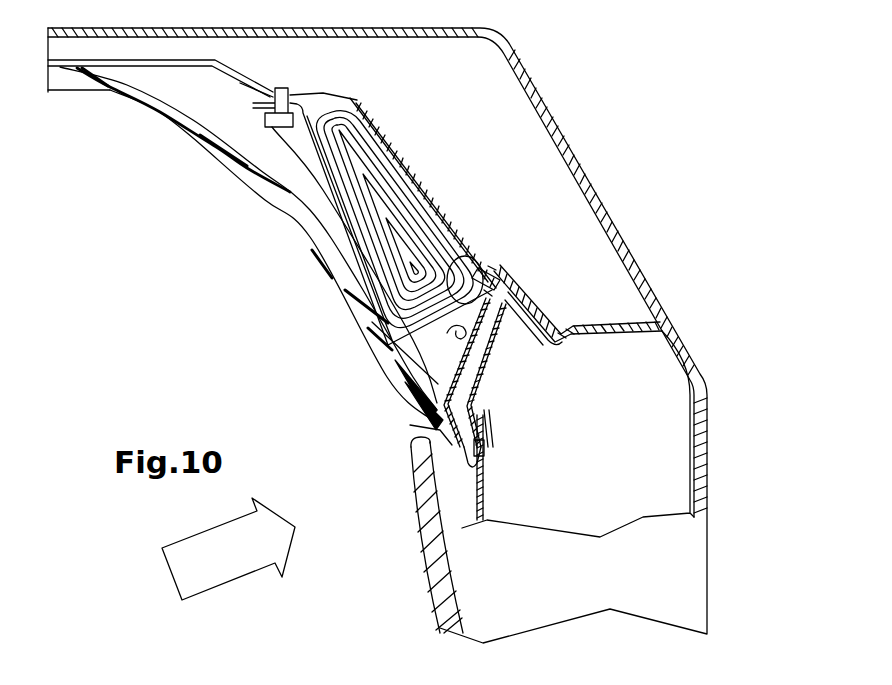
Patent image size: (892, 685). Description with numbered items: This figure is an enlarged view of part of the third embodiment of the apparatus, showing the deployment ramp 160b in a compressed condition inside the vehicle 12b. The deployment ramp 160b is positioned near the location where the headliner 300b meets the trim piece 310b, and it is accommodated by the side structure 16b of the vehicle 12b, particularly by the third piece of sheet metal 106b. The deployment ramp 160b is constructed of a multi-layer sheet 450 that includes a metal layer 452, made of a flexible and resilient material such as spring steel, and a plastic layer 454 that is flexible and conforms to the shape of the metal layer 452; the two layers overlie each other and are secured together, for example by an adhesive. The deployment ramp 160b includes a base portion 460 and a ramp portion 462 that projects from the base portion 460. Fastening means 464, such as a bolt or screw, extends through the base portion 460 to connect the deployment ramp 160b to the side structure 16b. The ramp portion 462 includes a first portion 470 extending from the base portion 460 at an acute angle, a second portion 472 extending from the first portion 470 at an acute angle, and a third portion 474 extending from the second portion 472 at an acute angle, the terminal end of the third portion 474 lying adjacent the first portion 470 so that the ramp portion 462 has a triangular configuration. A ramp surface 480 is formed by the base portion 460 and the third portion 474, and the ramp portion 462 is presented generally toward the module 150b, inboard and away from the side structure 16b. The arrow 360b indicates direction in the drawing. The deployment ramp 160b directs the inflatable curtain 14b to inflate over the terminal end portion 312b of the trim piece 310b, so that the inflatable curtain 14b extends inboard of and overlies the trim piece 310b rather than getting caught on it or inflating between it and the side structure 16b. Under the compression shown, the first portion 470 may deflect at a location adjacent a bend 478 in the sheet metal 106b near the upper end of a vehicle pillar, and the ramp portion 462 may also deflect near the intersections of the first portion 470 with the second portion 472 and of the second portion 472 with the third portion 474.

The vehicle 12b is at (586, 92).
The inflatable curtain 14b is at (398, 218).
The side structure 16b is at (722, 449).
The third piece of sheet metal 106b is at (485, 509).
The module 150b is at (300, 190).
The deployment ramp 160b is at (438, 382).
The headliner 300b is at (293, 212).
The trim piece 310b is at (437, 558).
The terminal end portion 312b is at (408, 449).
The flow direction arrow 360b is at (222, 560).
The multi-layer sheet 450 is at (442, 422).
The metal layer 452 is at (465, 350).
The plastic layer 454 is at (482, 375).
The base portion 460 is at (489, 290).
The ramp portion 462 is at (484, 450).
The fastening means 464 is at (470, 270).
The first portion 470 is at (488, 432).
The second portion 472 is at (414, 428).
The third portion 474 is at (502, 322).
The bend 478 is at (490, 420).
The ramp surface 480 is at (407, 340).